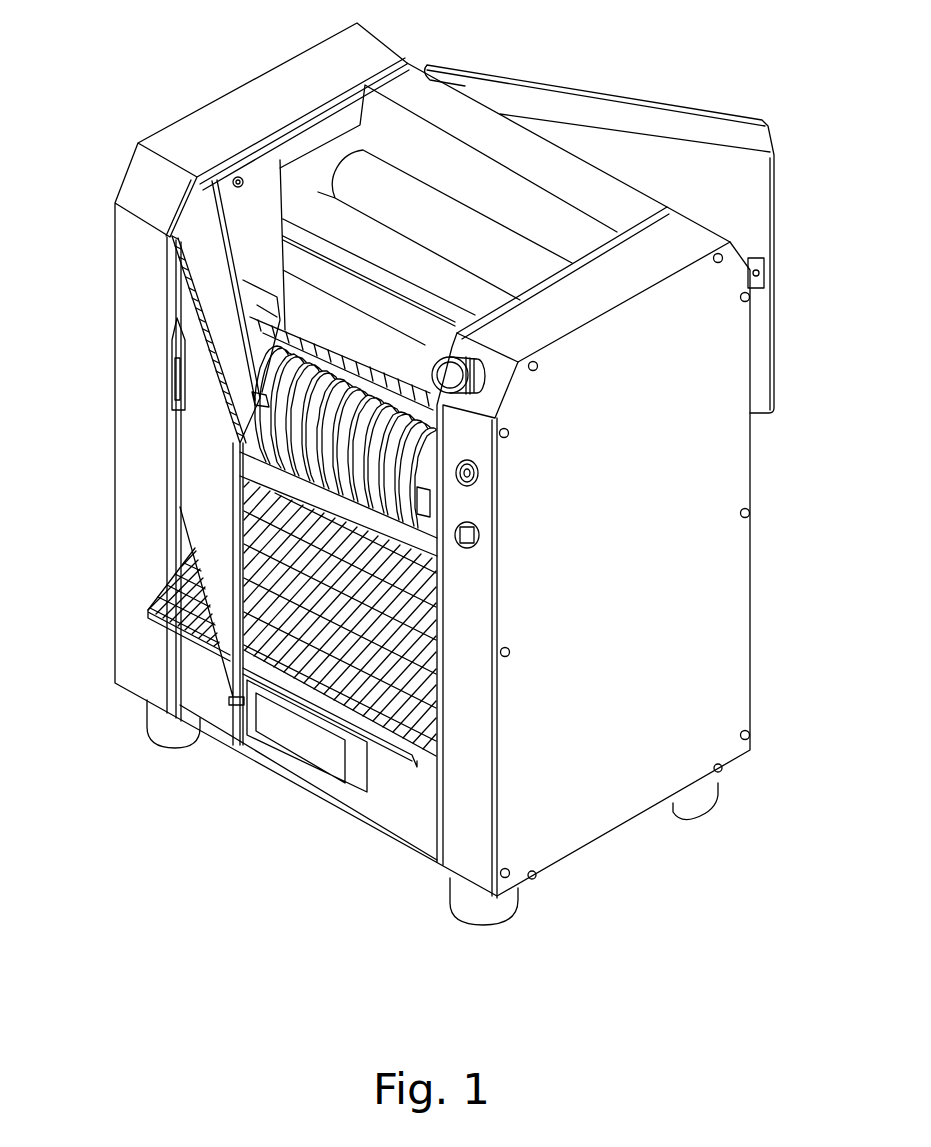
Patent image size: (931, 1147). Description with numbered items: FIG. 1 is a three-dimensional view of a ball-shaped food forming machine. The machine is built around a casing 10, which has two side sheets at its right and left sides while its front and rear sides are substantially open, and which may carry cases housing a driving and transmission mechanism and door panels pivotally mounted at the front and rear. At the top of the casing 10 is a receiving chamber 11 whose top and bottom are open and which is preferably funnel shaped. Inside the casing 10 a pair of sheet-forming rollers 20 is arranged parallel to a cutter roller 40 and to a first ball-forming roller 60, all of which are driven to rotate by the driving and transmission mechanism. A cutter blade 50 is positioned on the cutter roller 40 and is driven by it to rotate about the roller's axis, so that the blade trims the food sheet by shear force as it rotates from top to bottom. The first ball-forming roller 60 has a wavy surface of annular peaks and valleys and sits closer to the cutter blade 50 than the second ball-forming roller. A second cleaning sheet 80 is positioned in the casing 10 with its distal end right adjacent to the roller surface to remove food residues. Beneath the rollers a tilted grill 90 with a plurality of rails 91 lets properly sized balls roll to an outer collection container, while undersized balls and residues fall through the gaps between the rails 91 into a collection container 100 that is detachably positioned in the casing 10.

The casing 10 is at (598, 810).
The receiving chamber 11 is at (432, 148).
The sheet-forming rollers 20 is at (270, 283).
The cutter roller 40 is at (288, 323).
The cutter blade 50 is at (270, 355).
The first ball-forming roller 60 is at (313, 446).
The second cleaning sheet 80 is at (313, 500).
The grill 90 is at (157, 630).
The rails 91 is at (170, 592).
The collection container 100 is at (405, 808).